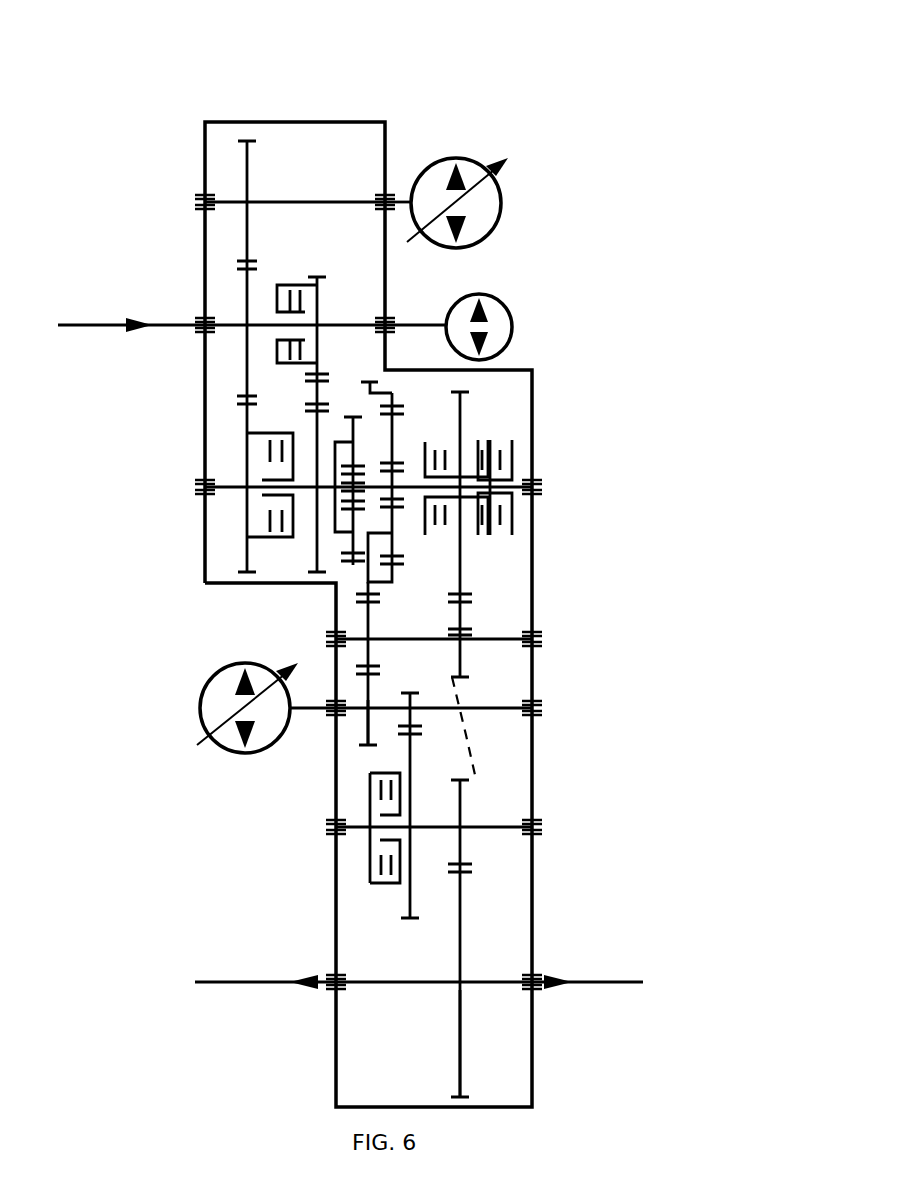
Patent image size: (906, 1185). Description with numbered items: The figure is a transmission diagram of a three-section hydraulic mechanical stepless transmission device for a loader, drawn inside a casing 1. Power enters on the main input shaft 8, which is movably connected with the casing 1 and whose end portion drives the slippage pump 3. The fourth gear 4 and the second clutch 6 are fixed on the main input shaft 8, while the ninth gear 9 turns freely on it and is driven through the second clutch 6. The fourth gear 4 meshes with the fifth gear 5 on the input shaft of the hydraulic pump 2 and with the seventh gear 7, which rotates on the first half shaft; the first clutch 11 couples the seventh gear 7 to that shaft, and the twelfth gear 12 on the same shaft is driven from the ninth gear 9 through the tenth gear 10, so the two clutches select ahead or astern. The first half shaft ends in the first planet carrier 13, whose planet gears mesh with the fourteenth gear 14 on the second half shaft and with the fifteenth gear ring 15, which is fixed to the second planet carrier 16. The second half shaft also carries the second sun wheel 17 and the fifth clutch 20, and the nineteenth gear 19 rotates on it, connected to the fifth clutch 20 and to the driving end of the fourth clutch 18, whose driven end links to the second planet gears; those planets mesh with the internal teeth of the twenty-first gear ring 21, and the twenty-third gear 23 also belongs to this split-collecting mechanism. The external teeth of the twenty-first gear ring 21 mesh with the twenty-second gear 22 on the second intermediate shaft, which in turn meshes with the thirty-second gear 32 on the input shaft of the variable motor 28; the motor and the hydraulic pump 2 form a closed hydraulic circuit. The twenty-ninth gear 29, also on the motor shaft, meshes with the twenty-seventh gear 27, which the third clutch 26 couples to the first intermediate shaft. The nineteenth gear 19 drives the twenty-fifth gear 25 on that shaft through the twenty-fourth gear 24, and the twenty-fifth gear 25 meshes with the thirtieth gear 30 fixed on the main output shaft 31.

The casing 1 is at (258, 120).
The hydraulic pump 2 is at (505, 200).
The slippage pump 3 is at (500, 320).
The fourth gear 4 is at (247, 285).
The fifth gear 5 is at (247, 182).
The second clutch 6 is at (302, 293).
The seventh gear 7 is at (247, 412).
The main input shaft 8 is at (78, 325).
The ninth gear 9 is at (317, 278).
The tenth gear 10 is at (320, 378).
The first clutch 11 is at (258, 452).
The twelfth gear 12 is at (338, 530).
The first planet carrier 13 is at (353, 565).
The fourteenth gear 14 is at (345, 490).
The fifteenth gear ring 15 is at (392, 560).
The second planet carrier 16 is at (396, 418).
The second sun wheel 17 is at (395, 497).
The fourth clutch 18 is at (495, 462).
The nineteenth gear 19 is at (462, 392).
The fifth clutch 20 is at (515, 455).
The twenty-first gear ring 21 is at (400, 572).
The twenty-second gear 22 is at (372, 617).
The twenty-third gear 23 is at (385, 393).
The twenty-fourth gear 24 is at (462, 662).
The twenty-fifth gear 25 is at (462, 855).
The third clutch 26 is at (375, 865).
The twenty-seventh gear 27 is at (405, 885).
The variable motor 28 is at (200, 700).
The twenty-ninth gear 29 is at (412, 712).
The thirtieth gear 30 is at (462, 945).
The main output shaft 31 is at (480, 982).
The thirty-second gear 32 is at (360, 735).